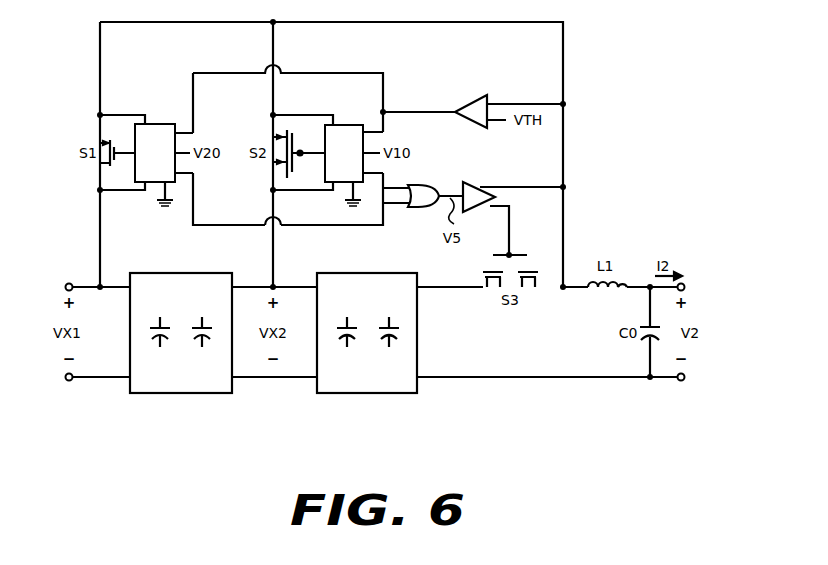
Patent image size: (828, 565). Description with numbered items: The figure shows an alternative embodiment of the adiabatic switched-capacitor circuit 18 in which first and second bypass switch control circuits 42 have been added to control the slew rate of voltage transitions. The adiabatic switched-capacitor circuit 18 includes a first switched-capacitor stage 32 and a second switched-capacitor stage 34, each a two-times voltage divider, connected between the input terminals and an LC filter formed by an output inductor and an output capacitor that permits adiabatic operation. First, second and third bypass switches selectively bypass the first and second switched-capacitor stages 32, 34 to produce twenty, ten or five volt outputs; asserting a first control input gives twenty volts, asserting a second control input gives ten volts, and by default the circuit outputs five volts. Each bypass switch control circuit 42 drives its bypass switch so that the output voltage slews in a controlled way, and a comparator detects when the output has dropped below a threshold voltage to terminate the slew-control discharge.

The adiabatic switched-capacitor circuit 18 is at (652, 142).
The first switched-capacitor stage 32 is at (180, 400).
The second switched-capacitor stage 34 is at (366, 400).
The bypass switch control circuit 42 is at (164, 124).